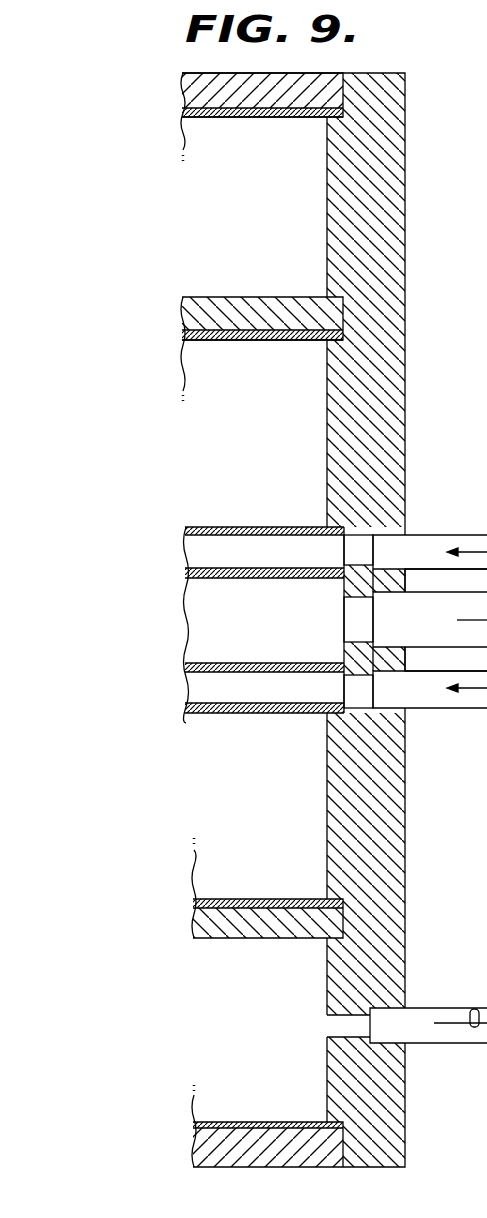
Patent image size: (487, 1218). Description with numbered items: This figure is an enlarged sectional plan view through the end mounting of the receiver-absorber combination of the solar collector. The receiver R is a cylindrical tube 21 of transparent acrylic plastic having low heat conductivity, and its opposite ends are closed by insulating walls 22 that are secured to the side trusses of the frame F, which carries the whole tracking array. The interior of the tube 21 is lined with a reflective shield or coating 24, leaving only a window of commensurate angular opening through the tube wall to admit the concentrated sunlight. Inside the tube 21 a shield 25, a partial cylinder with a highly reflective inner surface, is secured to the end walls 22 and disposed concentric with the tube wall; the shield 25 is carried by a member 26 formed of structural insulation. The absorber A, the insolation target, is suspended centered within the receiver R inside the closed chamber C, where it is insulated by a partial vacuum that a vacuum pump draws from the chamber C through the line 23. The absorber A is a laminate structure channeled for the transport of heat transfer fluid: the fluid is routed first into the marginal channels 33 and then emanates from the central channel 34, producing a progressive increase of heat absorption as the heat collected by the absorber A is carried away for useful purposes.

The cylindrical tube 21 is at (263, 73).
The insulating walls 22 is at (395, 259).
The line 23 is at (446, 1034).
The reflective shield or coating 24 is at (266, 117).
The shield 25 is at (245, 340).
The member 26 is at (263, 297).
The marginal channels 33 is at (281, 690).
The central channel 34 is at (291, 620).
The receiver R is at (397, 72).
The frame F is at (464, 473).
The absorber A is at (283, 526).
The closed chamber C is at (278, 800).